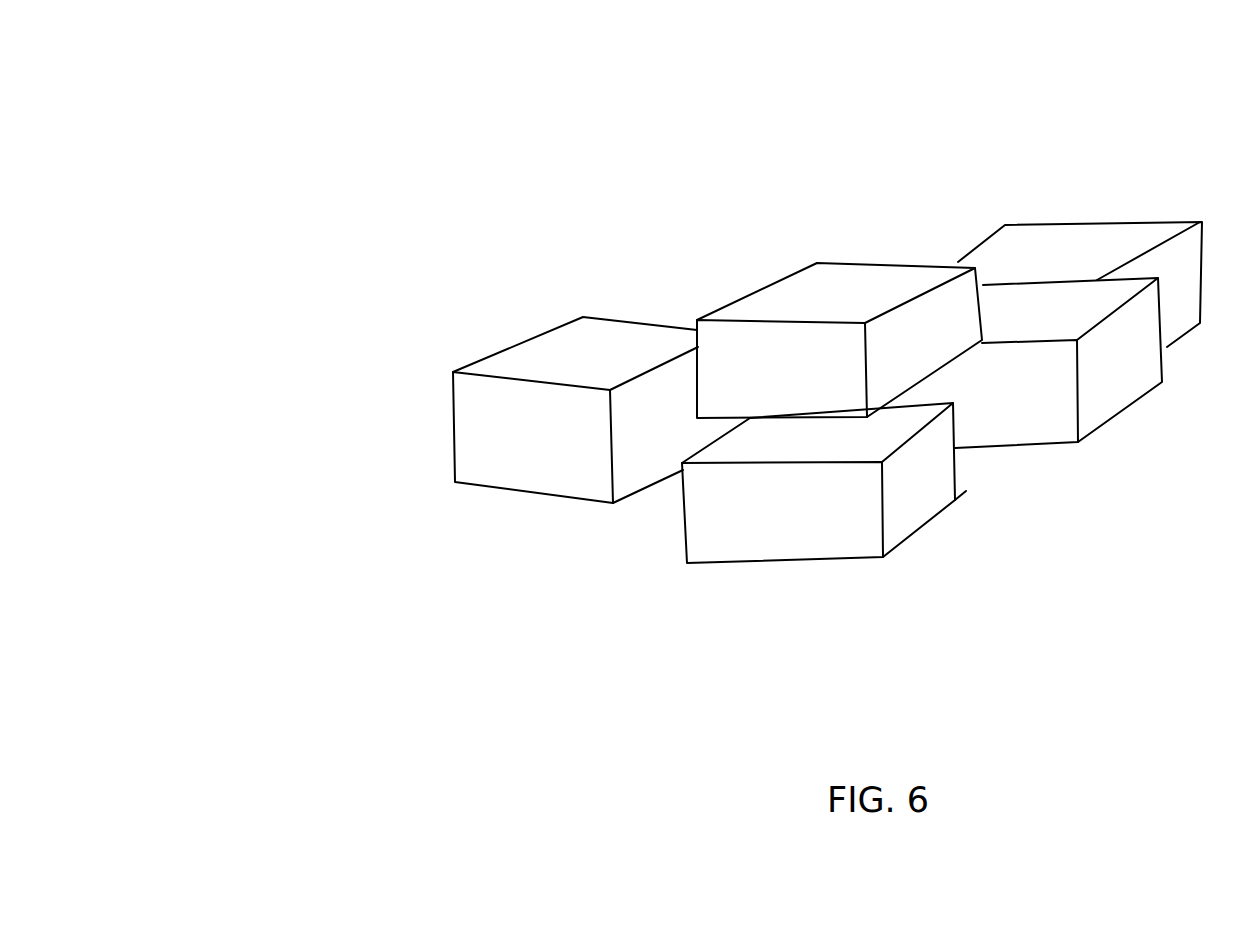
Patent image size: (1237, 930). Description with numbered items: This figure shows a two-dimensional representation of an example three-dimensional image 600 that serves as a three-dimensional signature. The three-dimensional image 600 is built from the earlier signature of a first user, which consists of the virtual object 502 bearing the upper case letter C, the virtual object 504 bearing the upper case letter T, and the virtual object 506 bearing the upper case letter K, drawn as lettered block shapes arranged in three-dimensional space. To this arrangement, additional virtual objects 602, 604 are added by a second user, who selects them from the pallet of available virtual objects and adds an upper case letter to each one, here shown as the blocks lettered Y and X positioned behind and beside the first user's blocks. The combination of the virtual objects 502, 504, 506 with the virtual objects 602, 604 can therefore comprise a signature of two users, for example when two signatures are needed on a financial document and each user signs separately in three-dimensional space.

The 3D image 600 is at (274, 61).
The virtual object 502 is at (525, 330).
The virtual object 504 is at (762, 275).
The virtual object 506 is at (935, 527).
The additional virtual object 602 is at (1097, 213).
The additional virtual object 604 is at (1138, 408).